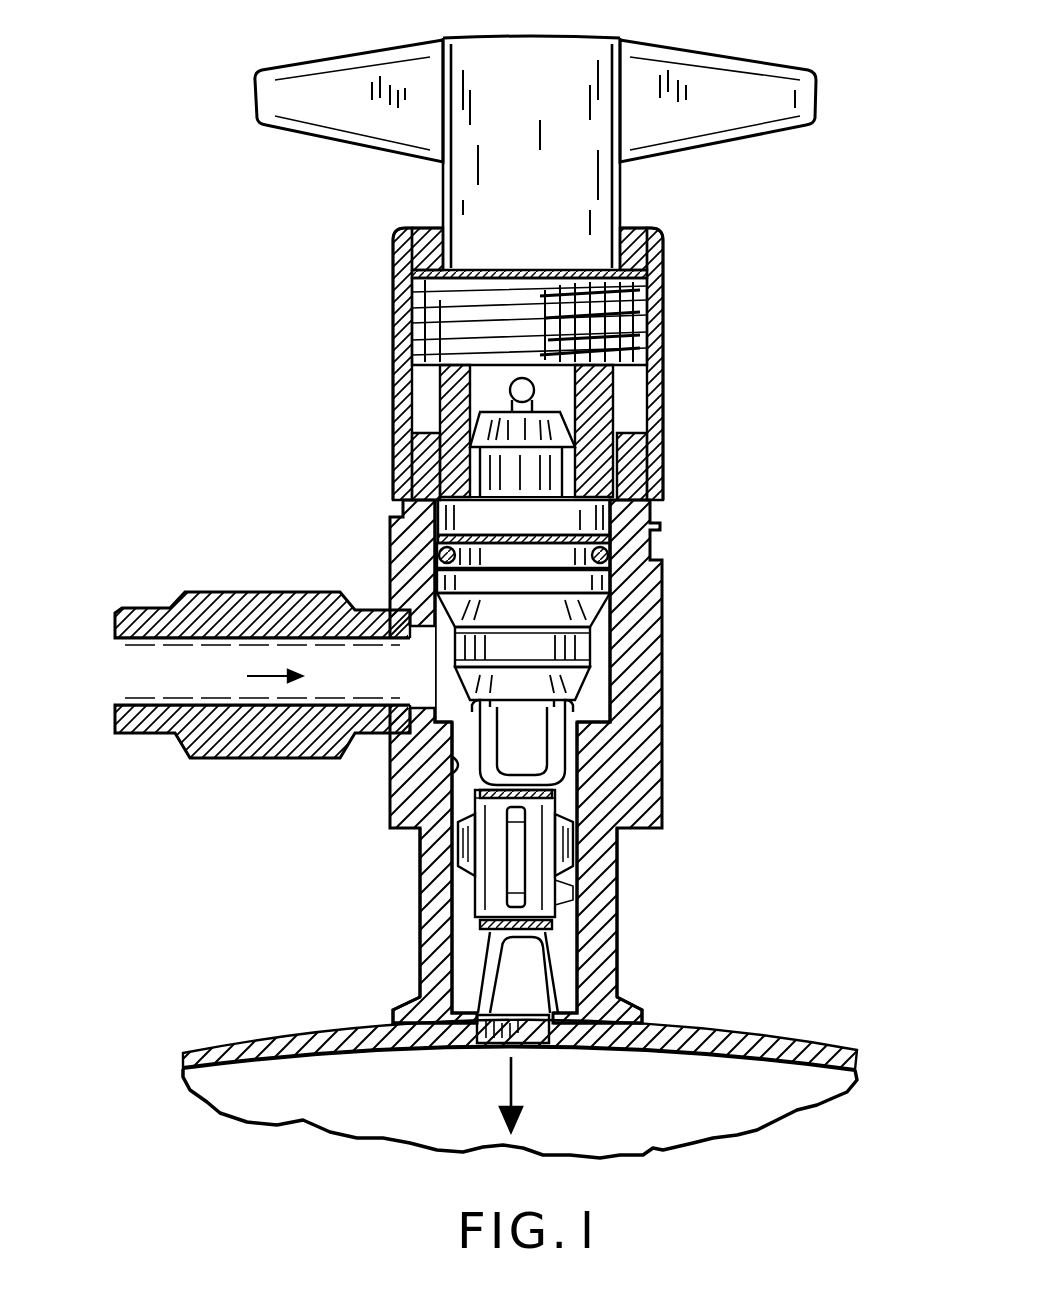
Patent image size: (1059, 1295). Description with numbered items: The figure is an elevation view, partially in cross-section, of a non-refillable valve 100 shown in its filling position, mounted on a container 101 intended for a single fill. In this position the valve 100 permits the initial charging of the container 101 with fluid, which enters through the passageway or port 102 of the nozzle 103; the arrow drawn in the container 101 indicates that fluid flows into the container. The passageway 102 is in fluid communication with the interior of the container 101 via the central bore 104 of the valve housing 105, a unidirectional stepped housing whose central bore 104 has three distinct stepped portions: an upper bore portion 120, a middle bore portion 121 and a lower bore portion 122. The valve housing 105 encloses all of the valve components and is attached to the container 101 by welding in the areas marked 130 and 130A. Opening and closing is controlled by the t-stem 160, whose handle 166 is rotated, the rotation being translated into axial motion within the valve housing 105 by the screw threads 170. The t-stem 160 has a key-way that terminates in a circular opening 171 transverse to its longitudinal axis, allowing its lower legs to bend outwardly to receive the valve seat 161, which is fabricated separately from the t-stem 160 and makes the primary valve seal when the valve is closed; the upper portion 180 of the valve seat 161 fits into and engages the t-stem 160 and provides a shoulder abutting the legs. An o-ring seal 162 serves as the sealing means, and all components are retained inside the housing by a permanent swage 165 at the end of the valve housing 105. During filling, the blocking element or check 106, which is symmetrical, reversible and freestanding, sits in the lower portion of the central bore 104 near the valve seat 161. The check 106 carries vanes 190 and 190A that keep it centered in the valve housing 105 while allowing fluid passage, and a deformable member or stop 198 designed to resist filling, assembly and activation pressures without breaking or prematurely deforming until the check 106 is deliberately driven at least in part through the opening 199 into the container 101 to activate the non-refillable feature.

The non-refillable valve 100 is at (406, 300).
The container 101 is at (725, 1048).
The passageway (port) 102 is at (116, 662).
The nozzle 103 is at (253, 760).
The central bore 104 is at (452, 768).
The valve housing 105 is at (660, 661).
The blocking element (check) 106 is at (558, 954).
The upper bore portion 120 is at (396, 459).
The middle bore portion 121 is at (590, 679).
The lower bore portion 122 is at (620, 761).
The weld area 130 is at (398, 1021).
The weld area 130A is at (645, 1021).
The t-stem 160 is at (445, 190).
The valve seat 161 is at (598, 649).
The o-ring seal 162 is at (605, 557).
The permanent swage 165 is at (642, 235).
The handle 166 is at (737, 36).
The screw threads 170 is at (648, 321).
The circular opening 171 is at (535, 392).
The upper portion of valve seat 180 is at (432, 521).
The vane 190 is at (462, 852).
The vane 190A is at (560, 867).
The deformable member (stop) 198 is at (487, 958).
The opening 199 is at (497, 1048).